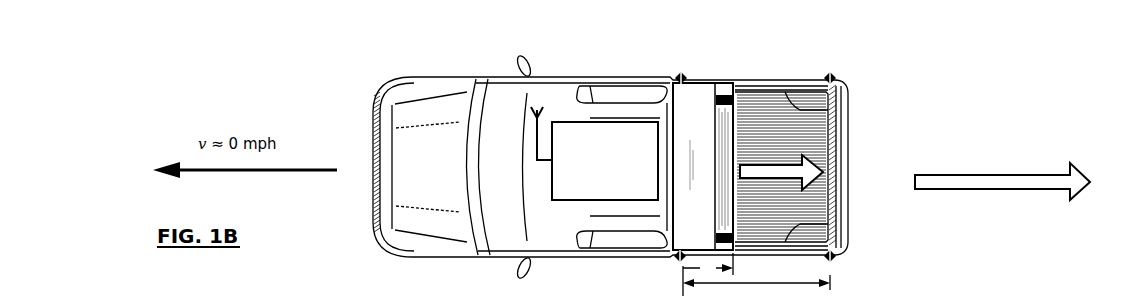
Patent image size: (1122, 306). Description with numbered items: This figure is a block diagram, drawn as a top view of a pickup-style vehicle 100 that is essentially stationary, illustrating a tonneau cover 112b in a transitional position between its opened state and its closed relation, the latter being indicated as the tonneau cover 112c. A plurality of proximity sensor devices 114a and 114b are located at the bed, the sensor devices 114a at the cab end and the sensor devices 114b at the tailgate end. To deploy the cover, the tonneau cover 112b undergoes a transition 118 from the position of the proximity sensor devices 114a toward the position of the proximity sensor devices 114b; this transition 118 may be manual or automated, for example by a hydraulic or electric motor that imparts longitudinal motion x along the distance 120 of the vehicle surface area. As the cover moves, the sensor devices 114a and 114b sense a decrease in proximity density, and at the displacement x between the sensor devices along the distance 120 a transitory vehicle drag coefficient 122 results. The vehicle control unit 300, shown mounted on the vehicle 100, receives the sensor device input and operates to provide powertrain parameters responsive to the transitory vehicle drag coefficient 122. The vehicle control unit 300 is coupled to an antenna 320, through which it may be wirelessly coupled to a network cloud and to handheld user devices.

The vehicle 100 is at (333, 110).
The tonneau cover 112b is at (703, 84).
The tonneau cover 112c is at (622, 305).
The proximity sensor device 114a is at (681, 72).
The proximity sensor device 114b is at (898, 0).
The transition 118 is at (779, 153).
The distance 120 is at (756, 279).
The transitory vehicle drag coefficient 122 is at (987, 159).
The vehicle control unit 300 is at (605, 161).
The antenna 320 is at (536, 152).